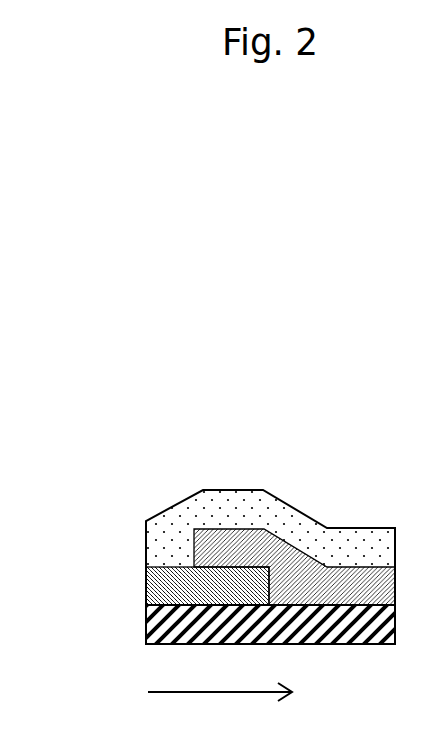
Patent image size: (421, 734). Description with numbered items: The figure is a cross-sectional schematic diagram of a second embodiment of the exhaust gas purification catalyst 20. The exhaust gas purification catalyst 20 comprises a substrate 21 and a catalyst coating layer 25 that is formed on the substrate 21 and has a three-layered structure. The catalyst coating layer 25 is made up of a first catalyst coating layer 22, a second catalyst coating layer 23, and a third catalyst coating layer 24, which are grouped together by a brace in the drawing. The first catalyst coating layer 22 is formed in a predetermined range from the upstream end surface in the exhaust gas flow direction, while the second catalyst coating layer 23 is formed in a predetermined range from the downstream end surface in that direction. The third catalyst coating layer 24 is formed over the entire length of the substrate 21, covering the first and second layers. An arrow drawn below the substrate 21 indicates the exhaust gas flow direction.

The exhaust gas purification catalyst 20 is at (142, 465).
The substrate 21 is at (153, 626).
The first catalyst coating layer 22 is at (153, 586).
The second catalyst coating layer 23 is at (205, 547).
The third catalyst coating layer 24 is at (152, 522).
The catalyst coating layer 25 is at (68, 497).